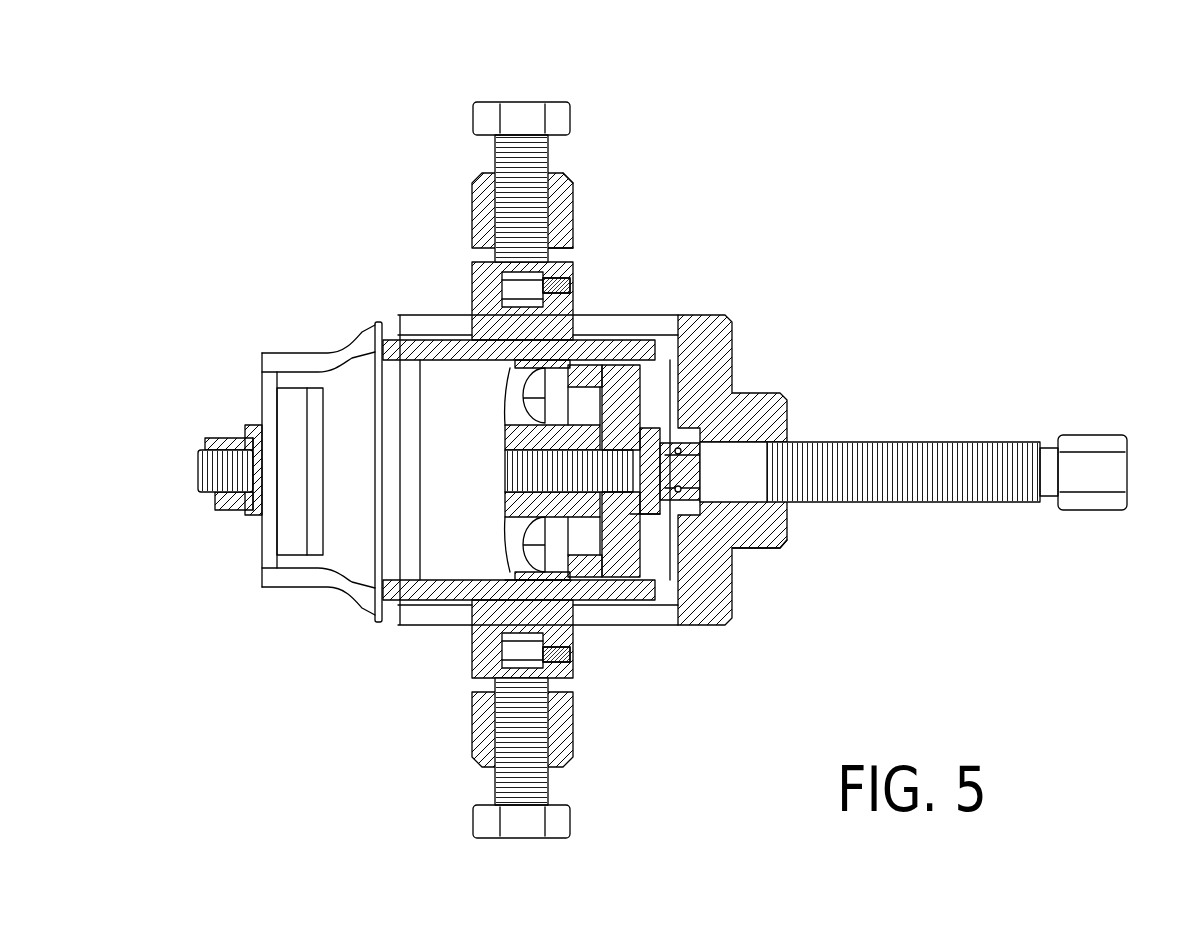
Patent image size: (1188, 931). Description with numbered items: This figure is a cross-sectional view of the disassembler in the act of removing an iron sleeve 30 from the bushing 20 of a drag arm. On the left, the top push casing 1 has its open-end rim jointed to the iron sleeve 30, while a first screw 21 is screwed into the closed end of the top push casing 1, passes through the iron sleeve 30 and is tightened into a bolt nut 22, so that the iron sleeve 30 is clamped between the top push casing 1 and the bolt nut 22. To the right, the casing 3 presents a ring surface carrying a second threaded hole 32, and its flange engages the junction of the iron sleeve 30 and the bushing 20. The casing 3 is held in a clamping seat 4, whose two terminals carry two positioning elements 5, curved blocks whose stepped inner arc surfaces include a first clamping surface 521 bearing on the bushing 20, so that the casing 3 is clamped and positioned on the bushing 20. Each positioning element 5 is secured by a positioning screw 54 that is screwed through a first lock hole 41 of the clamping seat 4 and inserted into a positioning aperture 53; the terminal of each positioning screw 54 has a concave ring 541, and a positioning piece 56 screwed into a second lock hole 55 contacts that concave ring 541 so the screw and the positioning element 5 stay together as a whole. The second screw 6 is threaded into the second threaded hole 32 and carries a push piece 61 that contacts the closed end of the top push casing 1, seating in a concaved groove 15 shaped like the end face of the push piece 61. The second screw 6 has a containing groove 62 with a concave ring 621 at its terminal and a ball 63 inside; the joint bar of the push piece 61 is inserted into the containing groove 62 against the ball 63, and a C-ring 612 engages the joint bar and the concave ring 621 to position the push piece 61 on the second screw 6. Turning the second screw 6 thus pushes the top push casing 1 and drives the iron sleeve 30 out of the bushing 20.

The top push casing 1 is at (623, 367).
The casing 3 is at (712, 308).
The clamping seat 4 is at (477, 195).
The positioning elements 5 is at (470, 305).
The second screw 6 is at (985, 440).
The concaved groove 15 is at (634, 508).
The bushing 20 is at (433, 598).
The first screw 21 is at (200, 471).
The bolt nut 22 is at (240, 440).
The iron sleeve 30 is at (413, 363).
The second threaded hole 32 is at (780, 525).
The first lock holes 41 is at (560, 190).
The positioning apertures 53 is at (435, 378).
The positioning screws 54 is at (512, 112).
The second lock hole 55 is at (553, 262).
The positioning piece 56 is at (572, 287).
The push piece 61 is at (653, 430).
The containing groove 62 is at (690, 520).
The ball 63 is at (723, 472).
The first clamping surface 521 is at (530, 590).
The concave ring 541 is at (520, 282).
The C-ring 612 is at (676, 440).
The concave ring 621 is at (672, 447).